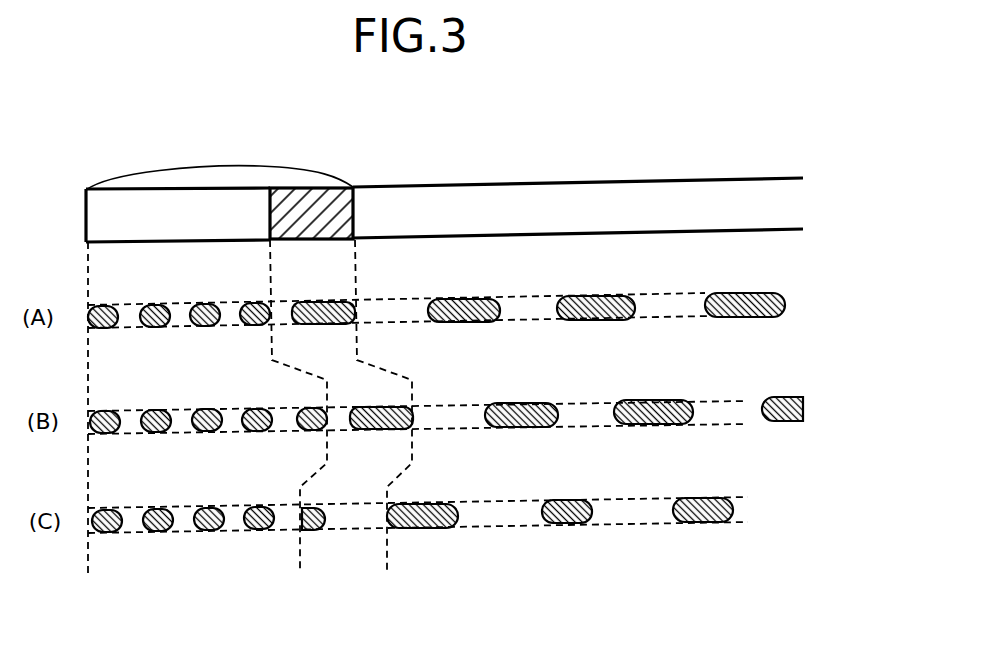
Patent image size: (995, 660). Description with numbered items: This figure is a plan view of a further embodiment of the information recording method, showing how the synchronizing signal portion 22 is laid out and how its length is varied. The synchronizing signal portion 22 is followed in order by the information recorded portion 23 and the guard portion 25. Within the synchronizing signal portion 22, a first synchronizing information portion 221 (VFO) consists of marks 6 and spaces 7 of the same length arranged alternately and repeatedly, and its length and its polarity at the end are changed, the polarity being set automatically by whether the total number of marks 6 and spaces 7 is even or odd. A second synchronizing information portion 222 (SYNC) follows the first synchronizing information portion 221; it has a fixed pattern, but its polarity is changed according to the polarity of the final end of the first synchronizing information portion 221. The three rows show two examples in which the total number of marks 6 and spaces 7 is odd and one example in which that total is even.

The synchronizing signal portion 22 is at (157, 172).
The first synchronizing information portion 221 is at (219, 198).
The second synchronizing information portion 222 is at (313, 195).
The information recorded portion 23 is at (417, 190).
The guard portion 25 is at (518, 184).
The marks 6 is at (463, 298).
The spaces 7 is at (537, 298).